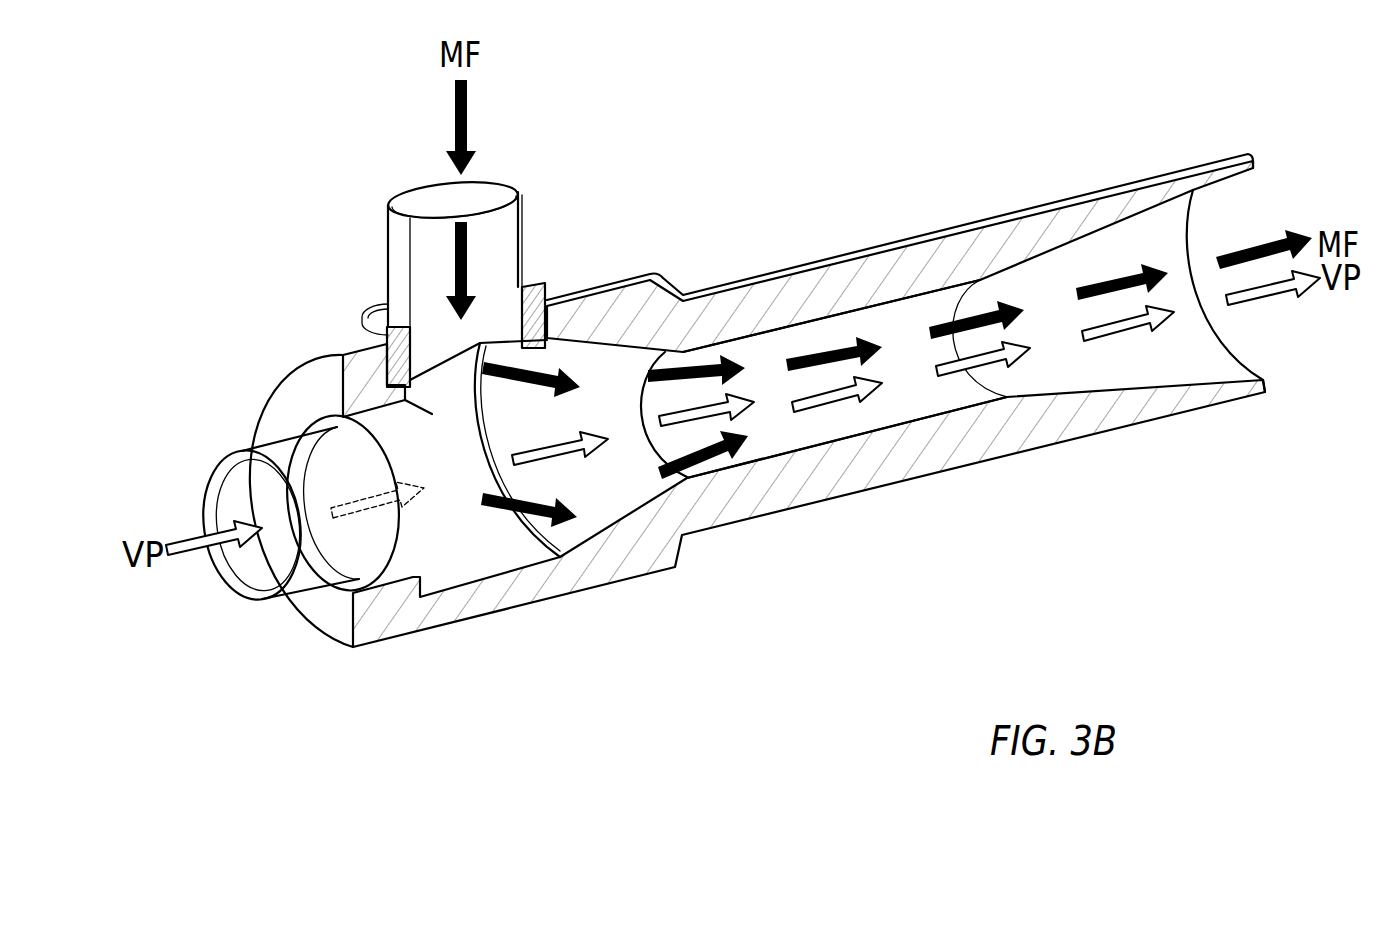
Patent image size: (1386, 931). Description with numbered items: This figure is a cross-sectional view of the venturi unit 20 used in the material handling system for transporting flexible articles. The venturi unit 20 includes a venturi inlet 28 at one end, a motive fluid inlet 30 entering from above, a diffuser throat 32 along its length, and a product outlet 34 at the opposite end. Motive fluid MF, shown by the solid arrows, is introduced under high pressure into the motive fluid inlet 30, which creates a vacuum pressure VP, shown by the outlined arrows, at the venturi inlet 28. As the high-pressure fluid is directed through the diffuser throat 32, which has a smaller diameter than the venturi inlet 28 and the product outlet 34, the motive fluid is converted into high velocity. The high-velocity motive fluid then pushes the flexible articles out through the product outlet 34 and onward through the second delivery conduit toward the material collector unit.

The venturi unit 20 is at (838, 250).
The venturi inlet 28 is at (188, 518).
The motive fluid inlet 30 is at (427, 178).
The diffuser throat 32 is at (832, 424).
The product outlet 34 is at (1265, 196).